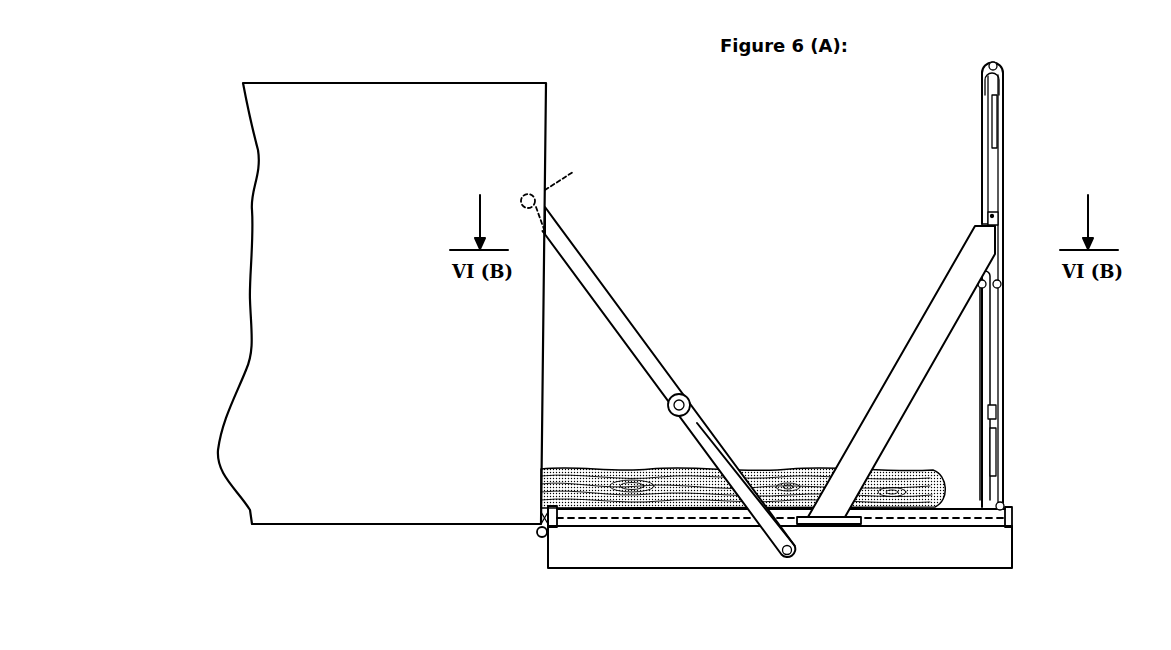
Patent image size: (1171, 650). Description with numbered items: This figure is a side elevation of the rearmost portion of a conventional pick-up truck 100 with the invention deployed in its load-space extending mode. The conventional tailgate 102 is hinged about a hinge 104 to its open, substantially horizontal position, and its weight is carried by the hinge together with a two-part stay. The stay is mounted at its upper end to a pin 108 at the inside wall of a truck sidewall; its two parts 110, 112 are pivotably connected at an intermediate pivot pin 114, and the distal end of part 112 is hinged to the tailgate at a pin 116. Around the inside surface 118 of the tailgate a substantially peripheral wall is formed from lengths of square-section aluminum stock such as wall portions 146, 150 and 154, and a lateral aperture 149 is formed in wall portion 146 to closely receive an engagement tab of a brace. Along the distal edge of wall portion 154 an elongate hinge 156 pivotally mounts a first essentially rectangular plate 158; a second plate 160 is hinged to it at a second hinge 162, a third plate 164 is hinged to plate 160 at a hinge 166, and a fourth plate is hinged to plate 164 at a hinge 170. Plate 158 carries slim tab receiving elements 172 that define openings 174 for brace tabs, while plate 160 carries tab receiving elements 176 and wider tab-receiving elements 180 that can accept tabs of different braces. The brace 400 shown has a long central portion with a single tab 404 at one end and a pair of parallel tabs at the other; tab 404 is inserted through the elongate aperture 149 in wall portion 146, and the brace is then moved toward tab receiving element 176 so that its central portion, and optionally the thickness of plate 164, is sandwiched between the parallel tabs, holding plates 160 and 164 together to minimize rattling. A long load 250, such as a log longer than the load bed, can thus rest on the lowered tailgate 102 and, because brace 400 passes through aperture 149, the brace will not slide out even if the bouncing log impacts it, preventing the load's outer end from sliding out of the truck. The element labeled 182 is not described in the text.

The pick-up truck 100 is at (566, 108).
The tailgate 102 is at (847, 558).
The hinge 104 is at (547, 520).
The pin 108 is at (548, 191).
The stay part 110 is at (669, 382).
The stay part 112 is at (697, 423).
The intermediate pivot pin 114 is at (688, 398).
The pin 116 is at (786, 556).
The inside surface 118 is at (724, 522).
The wall portion 146 is at (658, 512).
The lateral aperture 149 is at (848, 525).
The wall portion 150 is at (538, 529).
The wall portion 154 is at (1012, 518).
The elongate hinge 156 is at (1003, 503).
The first plate 158 is at (1003, 355).
The second plate 160 is at (1003, 137).
The second hinge 162 is at (1000, 286).
The third plate 164 is at (981, 122).
The hinge 166 is at (999, 66).
The hinge 170 is at (992, 290).
The tab receiving element 172 is at (993, 421).
The opening 174 is at (1000, 447).
The tab receiving element 176 is at (1000, 213).
The tab-receiving element 180 is at (990, 78).
The upper slider 182 is at (1000, 106).
The long load 250 is at (768, 470).
The brace 400 is at (912, 372).
The tab 404 is at (822, 525).